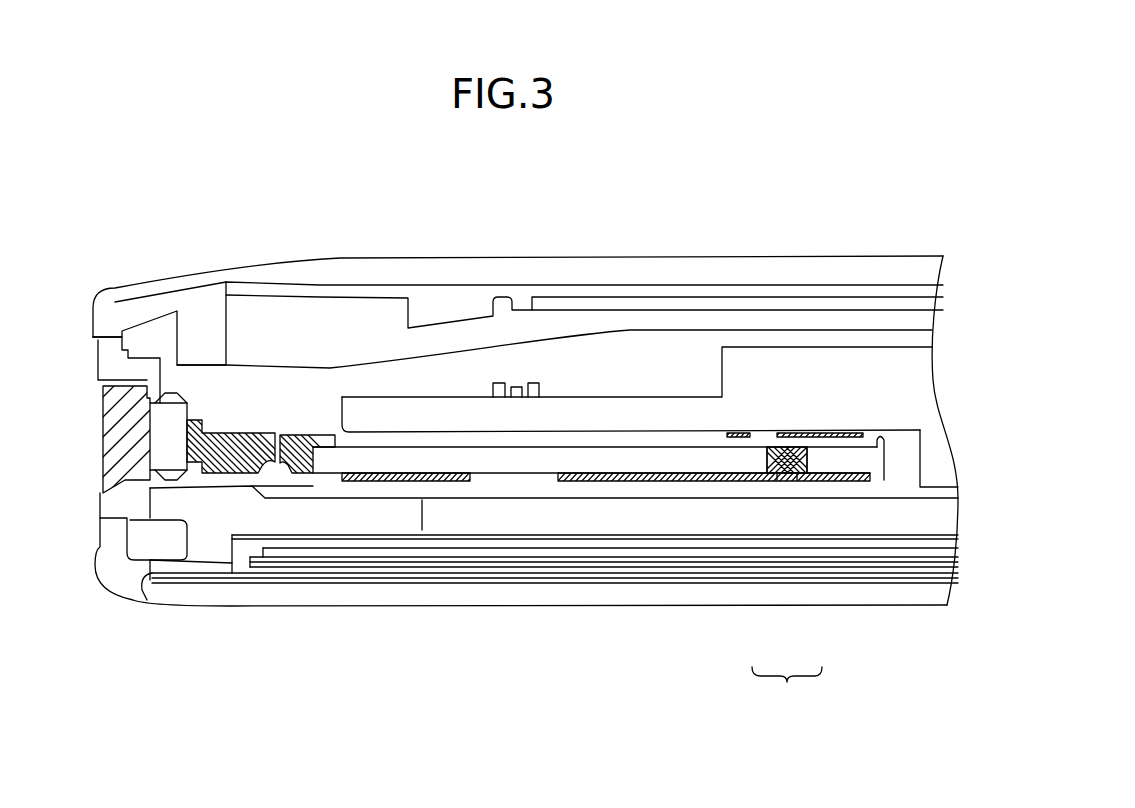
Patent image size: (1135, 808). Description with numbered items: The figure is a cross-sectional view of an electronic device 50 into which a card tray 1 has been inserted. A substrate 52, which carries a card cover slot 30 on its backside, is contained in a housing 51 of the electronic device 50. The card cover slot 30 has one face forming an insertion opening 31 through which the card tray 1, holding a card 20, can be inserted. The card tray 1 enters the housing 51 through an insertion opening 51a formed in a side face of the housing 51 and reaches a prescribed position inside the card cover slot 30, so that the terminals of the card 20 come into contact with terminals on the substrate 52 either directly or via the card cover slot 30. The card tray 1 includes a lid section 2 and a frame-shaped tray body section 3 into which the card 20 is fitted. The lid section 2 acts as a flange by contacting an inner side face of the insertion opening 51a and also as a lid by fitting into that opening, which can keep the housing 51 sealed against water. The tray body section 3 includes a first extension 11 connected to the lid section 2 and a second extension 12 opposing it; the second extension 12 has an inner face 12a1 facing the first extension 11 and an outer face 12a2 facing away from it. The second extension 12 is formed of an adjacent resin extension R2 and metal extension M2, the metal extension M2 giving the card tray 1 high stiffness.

The card tray 1 is at (87, 442).
The lid section 2 is at (238, 423).
The tray body section 3 is at (320, 423).
The first extension 11 is at (299, 475).
The second extension 12 is at (787, 583).
The inner face 12a1 is at (764, 455).
The outer face 12a2 is at (810, 456).
The card 20 is at (533, 462).
The card cover slot 30 is at (400, 482).
The insertion opening 31 is at (352, 434).
The electronic device 50 is at (778, 173).
The housing 51 is at (710, 257).
The insertion opening 51a is at (102, 387).
The substrate 52 is at (813, 365).
The resin extension R2 is at (777, 480).
The metal extension M2 is at (797, 480).